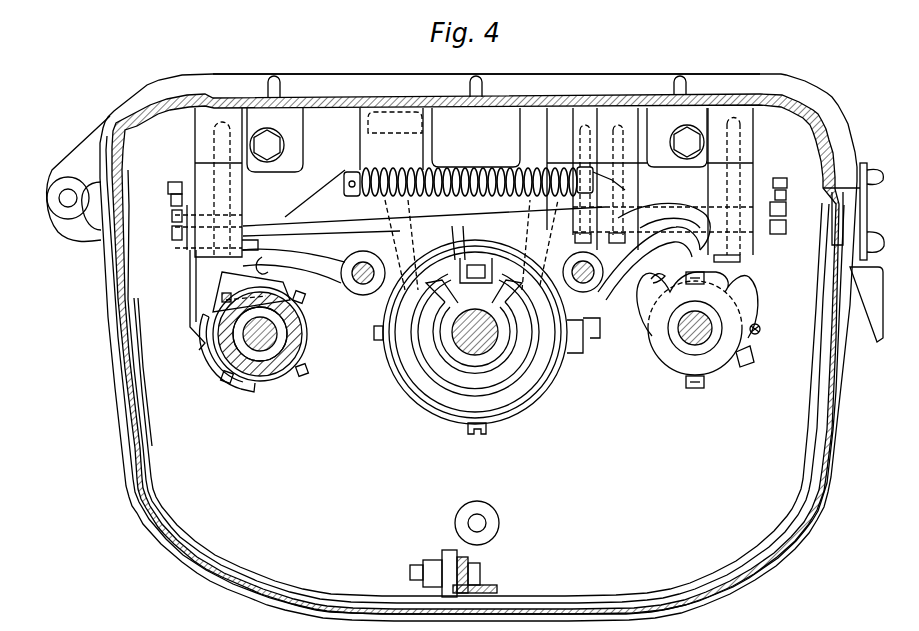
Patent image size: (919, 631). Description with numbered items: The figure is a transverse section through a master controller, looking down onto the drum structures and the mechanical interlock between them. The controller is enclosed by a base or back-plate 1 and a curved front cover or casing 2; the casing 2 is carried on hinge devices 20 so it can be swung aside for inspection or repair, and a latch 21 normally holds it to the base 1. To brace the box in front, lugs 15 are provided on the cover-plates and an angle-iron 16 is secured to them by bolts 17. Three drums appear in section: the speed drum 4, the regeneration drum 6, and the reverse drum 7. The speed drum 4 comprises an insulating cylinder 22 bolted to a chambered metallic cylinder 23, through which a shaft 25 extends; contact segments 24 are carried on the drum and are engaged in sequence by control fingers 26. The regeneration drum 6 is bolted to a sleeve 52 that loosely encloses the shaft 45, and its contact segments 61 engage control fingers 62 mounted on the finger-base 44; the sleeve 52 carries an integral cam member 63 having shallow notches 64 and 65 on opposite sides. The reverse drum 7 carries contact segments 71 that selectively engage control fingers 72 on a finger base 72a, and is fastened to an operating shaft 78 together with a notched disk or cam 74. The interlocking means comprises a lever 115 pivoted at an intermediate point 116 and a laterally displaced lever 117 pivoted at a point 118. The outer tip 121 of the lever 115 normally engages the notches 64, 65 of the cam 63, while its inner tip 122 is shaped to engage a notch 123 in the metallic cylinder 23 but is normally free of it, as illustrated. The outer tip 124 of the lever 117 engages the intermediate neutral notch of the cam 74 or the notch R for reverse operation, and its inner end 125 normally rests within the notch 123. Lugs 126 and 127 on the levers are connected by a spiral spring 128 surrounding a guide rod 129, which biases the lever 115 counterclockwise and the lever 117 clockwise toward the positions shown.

The base or back-plate 1 is at (325, 76).
The front cover or casing 2 is at (142, 505).
The speed drum 4 is at (486, 346).
The regeneration drum 6 is at (267, 353).
The reverse drum 7 is at (718, 279).
The lugs 15 is at (452, 551).
The angle-iron 16 is at (495, 587).
The bolts 17 is at (476, 572).
The hinge devices 20 is at (68, 202).
The latch 21 is at (876, 280).
The cylinder 22 is at (564, 359).
The chambered metallic cylinder or disk 23 is at (514, 389).
The outer ring 24 is at (437, 419).
The shaft 25 is at (488, 351).
The control fingers 26 is at (588, 329).
The finger-base 44 is at (237, 197).
The shaft 45 is at (270, 350).
The sleeve 52 is at (290, 343).
The contact segments 61 is at (247, 386).
The control fingers 62 is at (191, 315).
The cam member 63 is at (251, 289).
The notch 64 is at (262, 268).
The notch 65 is at (222, 296).
The contact segments 71 is at (745, 355).
The control fingers 72 is at (762, 309).
The finger base 72a is at (779, 180).
The notched disk or cam 74 is at (752, 283).
The operating shaft 78 is at (690, 341).
The lever or bar 115 is at (294, 254).
The intermediate pivotal point 116 is at (363, 286).
The lever 117 is at (663, 203).
The intermediate pivotal point 118 is at (584, 292).
The outer tip 121 is at (262, 266).
The inner tip or end 122 is at (458, 228).
The notch 123 is at (514, 253).
The outer tip 124 is at (692, 239).
The inner end or tip 125 is at (476, 270).
The lug 126 is at (347, 167).
The lug 127 is at (625, 190).
The spiral spring 128 is at (455, 154).
The guide rod 129 is at (495, 168).
The notch R is at (658, 268).